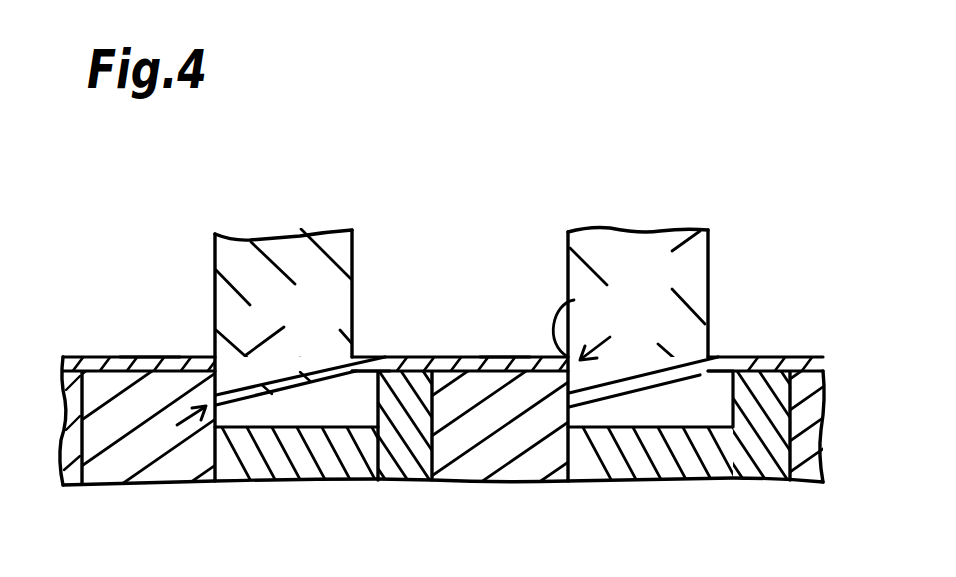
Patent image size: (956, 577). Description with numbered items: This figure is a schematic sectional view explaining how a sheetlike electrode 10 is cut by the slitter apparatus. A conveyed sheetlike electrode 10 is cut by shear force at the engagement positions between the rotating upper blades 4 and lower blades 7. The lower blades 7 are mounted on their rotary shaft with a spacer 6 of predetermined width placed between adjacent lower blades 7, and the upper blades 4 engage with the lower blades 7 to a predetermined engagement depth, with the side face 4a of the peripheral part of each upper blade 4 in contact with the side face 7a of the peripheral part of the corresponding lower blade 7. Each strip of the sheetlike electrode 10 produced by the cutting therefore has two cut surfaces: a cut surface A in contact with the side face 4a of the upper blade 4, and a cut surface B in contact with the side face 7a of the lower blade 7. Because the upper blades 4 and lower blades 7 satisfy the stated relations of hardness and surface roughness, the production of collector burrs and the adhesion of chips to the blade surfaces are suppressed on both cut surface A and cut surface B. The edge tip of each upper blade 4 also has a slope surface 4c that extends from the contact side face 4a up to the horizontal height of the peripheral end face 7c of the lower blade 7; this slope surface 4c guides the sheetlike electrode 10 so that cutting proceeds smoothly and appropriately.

The upper blade 4 is at (285, 250).
The side face of peripheral part of upper blade 4a is at (574, 300).
The slope surface 4c is at (320, 380).
The spacer 6 is at (355, 458).
The lower blade 7 is at (167, 463).
The side face of peripheral part of lower blade 7a is at (467, 351).
The peripheral end face of lower blade 7c is at (149, 358).
The sheetlike electrode 10 is at (97, 366).
The cut surface A is at (615, 326).
The cut surface B is at (175, 425).